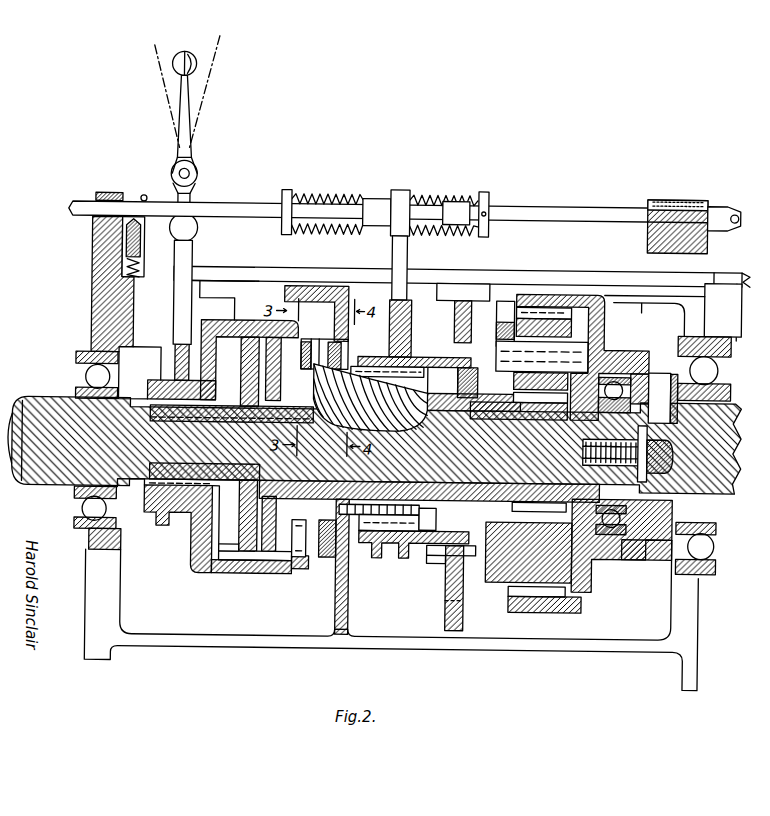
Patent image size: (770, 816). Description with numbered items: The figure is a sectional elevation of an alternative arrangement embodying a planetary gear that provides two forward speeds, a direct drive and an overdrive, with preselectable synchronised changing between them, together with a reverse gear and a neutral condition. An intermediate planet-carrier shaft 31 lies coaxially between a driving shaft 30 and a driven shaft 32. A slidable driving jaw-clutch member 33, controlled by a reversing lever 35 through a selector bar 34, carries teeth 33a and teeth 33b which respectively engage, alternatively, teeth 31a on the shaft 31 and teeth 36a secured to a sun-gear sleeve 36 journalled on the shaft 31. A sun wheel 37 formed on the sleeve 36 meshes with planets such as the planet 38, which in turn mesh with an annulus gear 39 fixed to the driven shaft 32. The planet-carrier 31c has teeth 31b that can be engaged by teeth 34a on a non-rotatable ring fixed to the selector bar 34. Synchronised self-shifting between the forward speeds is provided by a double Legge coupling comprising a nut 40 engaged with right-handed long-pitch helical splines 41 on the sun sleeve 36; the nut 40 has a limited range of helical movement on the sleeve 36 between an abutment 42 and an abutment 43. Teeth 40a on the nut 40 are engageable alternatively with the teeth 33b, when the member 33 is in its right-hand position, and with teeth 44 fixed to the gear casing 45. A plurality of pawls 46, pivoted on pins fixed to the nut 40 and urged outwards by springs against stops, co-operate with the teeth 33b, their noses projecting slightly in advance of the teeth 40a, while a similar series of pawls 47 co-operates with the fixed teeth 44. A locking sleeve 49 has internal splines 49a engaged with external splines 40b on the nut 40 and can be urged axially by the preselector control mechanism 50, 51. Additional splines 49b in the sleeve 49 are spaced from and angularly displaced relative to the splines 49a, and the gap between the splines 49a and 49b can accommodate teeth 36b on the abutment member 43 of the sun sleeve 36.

The driving shaft 30 is at (92, 436).
The intermediate planet-carrier shaft 31 is at (192, 527).
The teeth on shaft 31 31a is at (248, 320).
The teeth on planet-carrier 31b is at (442, 340).
The planet-carrier 31c is at (607, 347).
The driven shaft 32 is at (662, 370).
The slidable driving jaw-clutch member 33 is at (193, 577).
The teeth on jaw-clutch member 33a is at (220, 269).
The teeth on jaw-clutch member 33b is at (257, 280).
The selector bar 34 is at (200, 269).
The teeth on non-rotatable ring 34a is at (463, 335).
The reversing lever 35 is at (183, 125).
The sun-gear sleeve 36 is at (490, 535).
The teeth secured to sun-gear sleeve 36a is at (253, 577).
The teeth on abutment member 36b is at (500, 305).
The sun wheel 37 is at (545, 510).
The planet 38 is at (550, 320).
The annulus gear 39 is at (583, 293).
The nut 40 is at (352, 530).
The teeth on nut 40a is at (326, 340).
The external splines on nut 40b is at (380, 556).
The right-handed long-pitch helical splines 41 is at (300, 558).
The abutment 42 is at (207, 352).
The abutment 43 is at (497, 310).
The teeth fixed to gear casing 44 is at (353, 340).
The gear casing 45 is at (293, 638).
The pawls 46 is at (316, 340).
The pawls 47 is at (350, 300).
The locking sleeve 49 is at (415, 340).
The internal splines of locking sleeve 49a is at (428, 545).
The additional splines in locking sleeve 49b is at (458, 612).
The preselector control mechanism 50 is at (396, 192).
The preselector control mechanism 51 is at (560, 206).